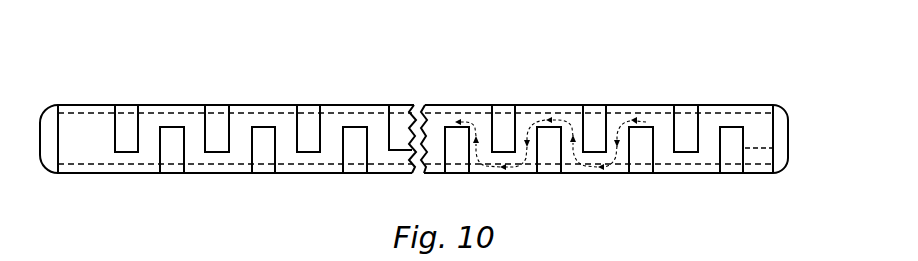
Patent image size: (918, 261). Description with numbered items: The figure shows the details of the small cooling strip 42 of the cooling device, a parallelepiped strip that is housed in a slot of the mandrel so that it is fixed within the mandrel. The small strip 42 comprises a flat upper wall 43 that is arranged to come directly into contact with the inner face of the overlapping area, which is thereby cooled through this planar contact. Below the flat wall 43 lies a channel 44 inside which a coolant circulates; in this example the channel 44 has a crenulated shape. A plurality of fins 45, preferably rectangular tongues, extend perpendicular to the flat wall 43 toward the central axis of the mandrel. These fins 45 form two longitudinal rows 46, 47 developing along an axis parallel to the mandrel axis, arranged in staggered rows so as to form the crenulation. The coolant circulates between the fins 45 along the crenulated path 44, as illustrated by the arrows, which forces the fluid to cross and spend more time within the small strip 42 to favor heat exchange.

The small cooling strip 42 is at (560, 58).
The flat upper wall 43 is at (148, 150).
The channel 44 is at (759, 138).
The fins 45 is at (213, 122).
The first longitudinal row 46 is at (718, 121).
The second longitudinal row 47 is at (756, 159).